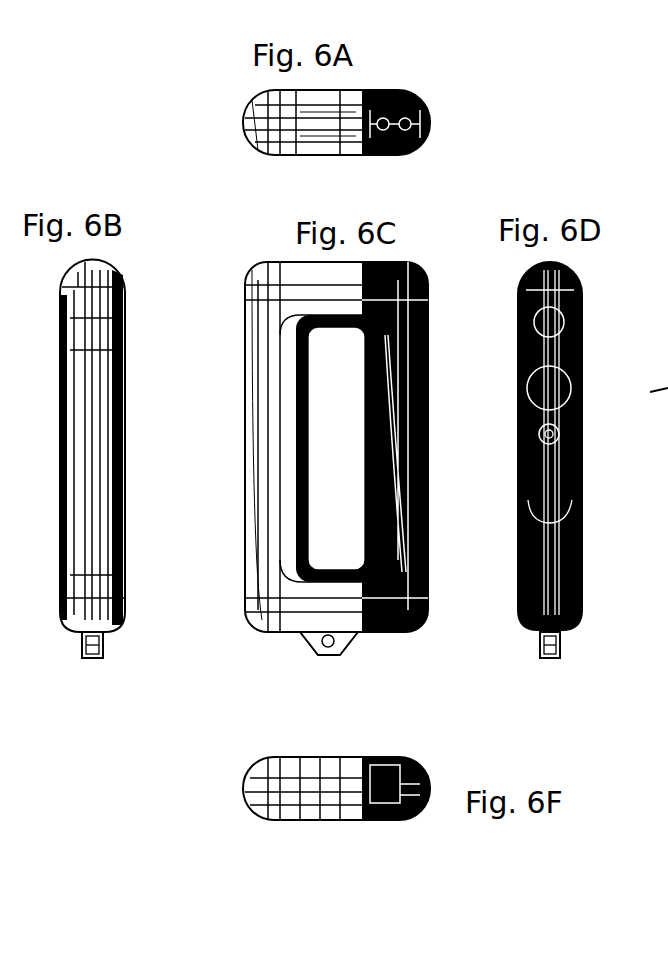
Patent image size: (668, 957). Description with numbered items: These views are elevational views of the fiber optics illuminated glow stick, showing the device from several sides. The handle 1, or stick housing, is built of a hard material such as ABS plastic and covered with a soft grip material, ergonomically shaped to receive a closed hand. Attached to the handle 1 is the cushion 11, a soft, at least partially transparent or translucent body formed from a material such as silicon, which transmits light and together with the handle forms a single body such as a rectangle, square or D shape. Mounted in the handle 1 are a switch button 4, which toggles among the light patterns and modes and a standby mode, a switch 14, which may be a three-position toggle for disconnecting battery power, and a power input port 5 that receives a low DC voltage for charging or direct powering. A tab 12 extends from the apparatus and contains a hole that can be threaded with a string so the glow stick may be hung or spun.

In FIG. 6A, the handle 1 is at (390, 92).
In FIG. 6C, the handle 1 is at (452, 594).
In FIG. 6D, the handle 1 is at (518, 567).
In FIG. 6F, the handle 1 is at (392, 822).
In FIG. 6A, the cushion 11 is at (290, 153).
In FIG. 6B, the cushion 11 is at (125, 530).
In FIG. 6C, the cushion 11 is at (245, 535).
In FIG. 6F, the cushion 11 is at (310, 822).
In FIG. 6B, the tab 12 is at (92, 662).
In FIG. 6C, the tab 12 is at (340, 650).
In FIG. 6D, the tab 12 is at (553, 660).
In FIG. 6D, the switch 14 is at (583, 300).
In FIG. 6D, the switch button 4 is at (583, 388).
In FIG. 6D, the power input port 5 is at (580, 447).